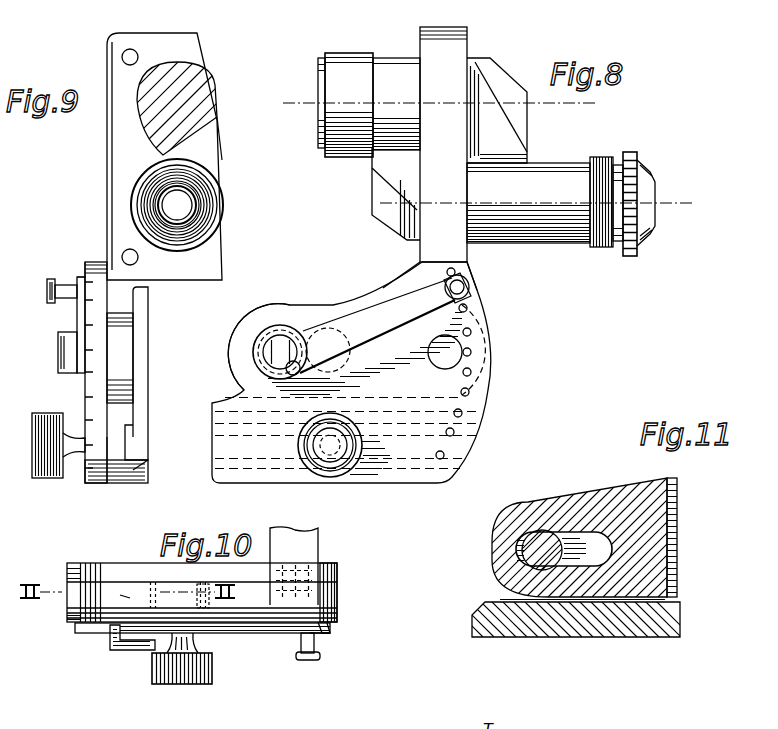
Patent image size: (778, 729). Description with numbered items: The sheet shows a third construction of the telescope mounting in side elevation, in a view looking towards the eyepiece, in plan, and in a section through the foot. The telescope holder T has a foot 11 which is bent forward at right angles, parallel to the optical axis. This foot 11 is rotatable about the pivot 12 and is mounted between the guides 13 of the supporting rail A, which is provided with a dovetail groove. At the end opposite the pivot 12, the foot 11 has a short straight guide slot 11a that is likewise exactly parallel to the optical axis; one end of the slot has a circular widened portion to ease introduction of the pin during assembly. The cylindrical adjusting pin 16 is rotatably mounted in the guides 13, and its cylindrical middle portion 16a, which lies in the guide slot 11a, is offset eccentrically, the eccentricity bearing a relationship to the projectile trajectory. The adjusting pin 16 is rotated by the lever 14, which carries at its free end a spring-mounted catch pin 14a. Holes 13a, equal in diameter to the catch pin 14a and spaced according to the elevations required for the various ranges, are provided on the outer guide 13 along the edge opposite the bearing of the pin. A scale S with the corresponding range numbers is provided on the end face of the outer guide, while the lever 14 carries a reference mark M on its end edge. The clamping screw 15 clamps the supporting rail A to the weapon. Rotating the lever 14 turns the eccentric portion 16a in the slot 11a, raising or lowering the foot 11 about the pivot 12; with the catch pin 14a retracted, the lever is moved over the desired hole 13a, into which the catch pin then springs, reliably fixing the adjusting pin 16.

In FIG. 9, the foot 11 is at (125, 340).
In FIG. 8, the foot 11 is at (232, 384).
In FIG. 11, the foot 11 is at (557, 512).
In FIG. 10, the foot 11 is at (75, 580).
In FIG. 8, the guide slot 11a is at (356, 356).
In FIG. 10, the guide slot 11a is at (205, 602).
In FIG. 8, the pivot 12 is at (447, 350).
In FIG. 9, the guides 13 is at (145, 360).
In FIG. 8, the guides 13 is at (259, 312).
In FIG. 11, the guides 13 is at (484, 598).
In FIG. 10, the guides 13 is at (70, 618).
In FIG. 8, the holes 13a is at (471, 372).
In FIG. 9, the lever 14 is at (77, 316).
In FIG. 8, the lever 14 is at (370, 306).
In FIG. 10, the lever 14 is at (262, 633).
In FIG. 9, the catch pin 14a is at (82, 286).
In FIG. 8, the catch pin 14a is at (470, 289).
In FIG. 10, the catch pin 14a is at (300, 648).
In FIG. 9, the clamping screw 15 is at (45, 478).
In FIG. 8, the clamping screw 15 is at (345, 460).
In FIG. 10, the clamping screw 15 is at (178, 684).
In FIG. 9, the adjusting pin 16 is at (58, 350).
In FIG. 8, the adjusting pin 16 is at (280, 352).
In FIG. 11, the adjusting pin 16 is at (522, 550).
In FIG. 10, the adjusting pin 16 is at (122, 650).
In FIG. 8, the middle portion 16a is at (297, 370).
In FIG. 11, the middle portion 16a is at (564, 549).
In FIG. 10, the middle portion 16a is at (128, 600).
In FIG. 9, the telescope holder T is at (199, 52).
In FIG. 8, the telescope holder T is at (488, 158).
In FIG. 10, the telescope holder T is at (314, 547).
In FIG. 9, the reference mark M is at (84, 284).
In FIG. 10, the reference mark M is at (326, 633).
In FIG. 9, the scale S is at (88, 375).
In FIG. 10, the scale S is at (337, 615).
In FIG. 9, the supporting rail A is at (140, 418).
In FIG. 11, the supporting rail A is at (577, 628).
In FIG. 10, the supporting rail A is at (97, 565).